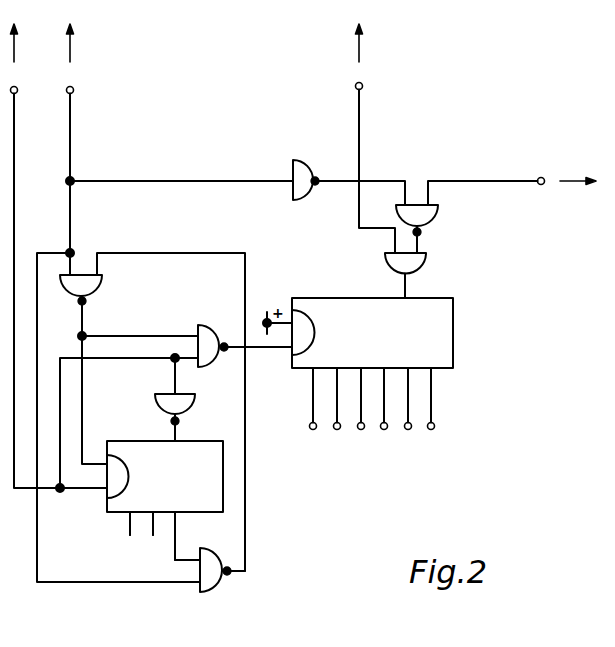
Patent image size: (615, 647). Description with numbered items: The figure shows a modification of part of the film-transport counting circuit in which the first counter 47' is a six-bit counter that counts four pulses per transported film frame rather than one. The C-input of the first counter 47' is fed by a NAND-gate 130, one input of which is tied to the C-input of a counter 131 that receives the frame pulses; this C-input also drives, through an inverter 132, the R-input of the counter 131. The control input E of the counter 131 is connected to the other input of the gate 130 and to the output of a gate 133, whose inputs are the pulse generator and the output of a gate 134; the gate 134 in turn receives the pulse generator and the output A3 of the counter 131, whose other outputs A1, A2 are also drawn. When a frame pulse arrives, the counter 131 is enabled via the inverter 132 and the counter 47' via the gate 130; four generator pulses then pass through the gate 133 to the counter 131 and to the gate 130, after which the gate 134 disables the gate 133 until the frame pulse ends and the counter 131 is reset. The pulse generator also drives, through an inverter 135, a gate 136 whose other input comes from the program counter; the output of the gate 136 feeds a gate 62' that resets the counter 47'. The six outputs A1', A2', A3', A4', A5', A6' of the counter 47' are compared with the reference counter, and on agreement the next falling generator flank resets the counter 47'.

The NAND-gate 130 is at (212, 326).
The counter 131 is at (146, 451).
The inverter 132 is at (190, 403).
The gate 133 is at (103, 283).
The gate 134 is at (214, 590).
The inverter 135 is at (305, 165).
The gate 136 is at (417, 210).
The gate 62' is at (376, 275).
The first counter 47' is at (400, 333).
The output of counter 131 A1 is at (108, 532).
The output of counter 131 A2 is at (135, 544).
The output of counter 131 A3 is at (198, 536).
The output line of counter 47' A1' is at (315, 420).
The output line of counter 47' A2' is at (345, 421).
The output line of counter 47' A3' is at (373, 421).
The output line of counter 47' A4' is at (398, 421).
The output line of counter 47' A5' is at (424, 420).
The output line of counter 47' A6' is at (450, 418).